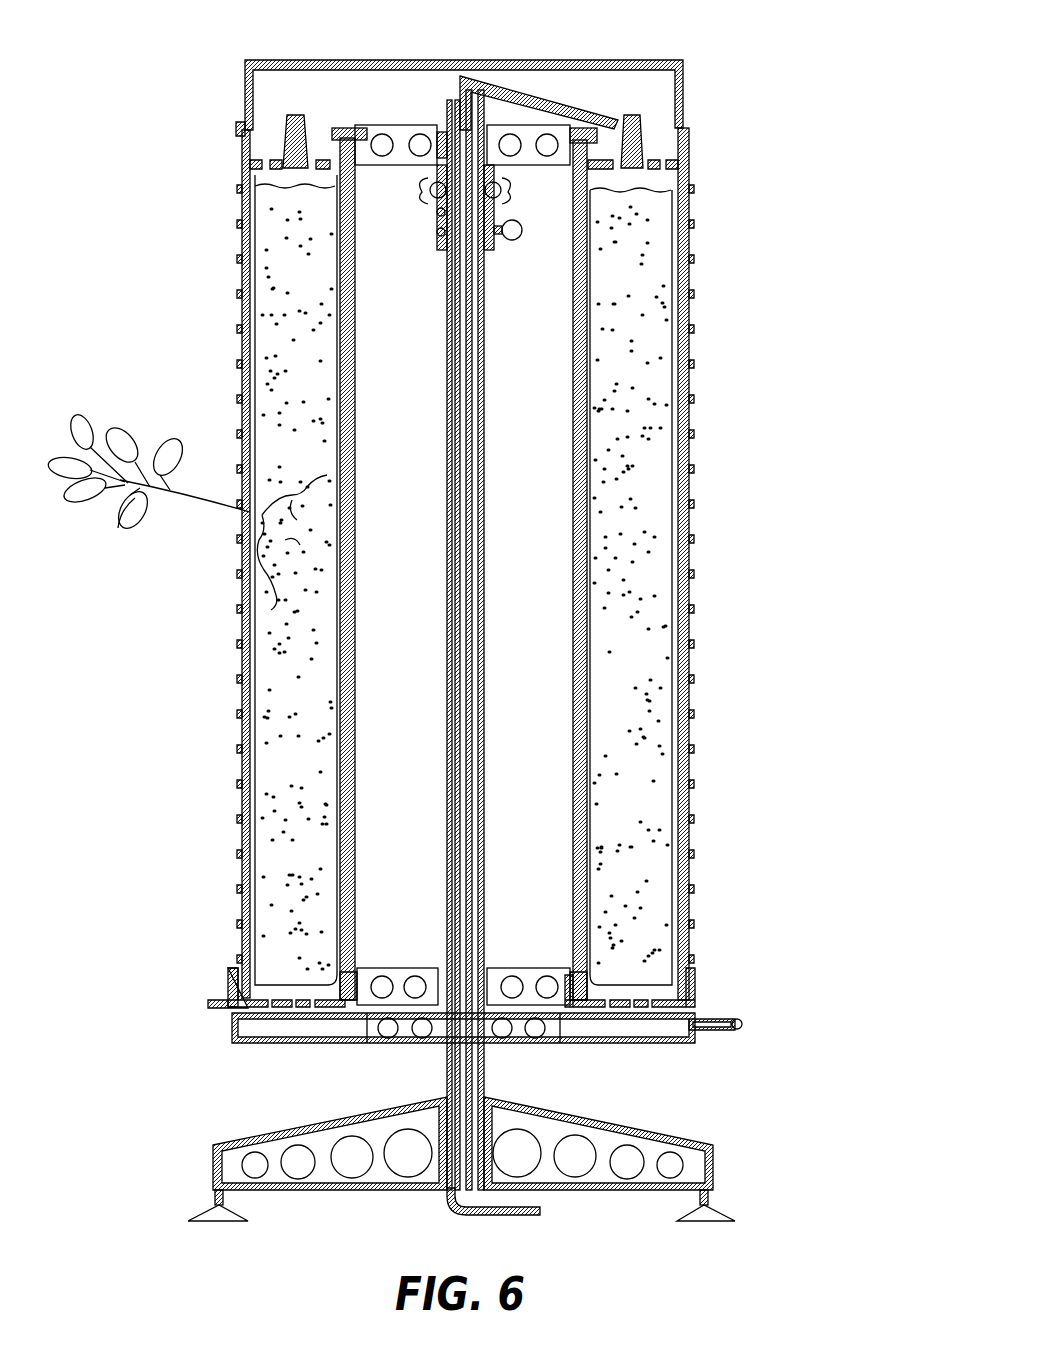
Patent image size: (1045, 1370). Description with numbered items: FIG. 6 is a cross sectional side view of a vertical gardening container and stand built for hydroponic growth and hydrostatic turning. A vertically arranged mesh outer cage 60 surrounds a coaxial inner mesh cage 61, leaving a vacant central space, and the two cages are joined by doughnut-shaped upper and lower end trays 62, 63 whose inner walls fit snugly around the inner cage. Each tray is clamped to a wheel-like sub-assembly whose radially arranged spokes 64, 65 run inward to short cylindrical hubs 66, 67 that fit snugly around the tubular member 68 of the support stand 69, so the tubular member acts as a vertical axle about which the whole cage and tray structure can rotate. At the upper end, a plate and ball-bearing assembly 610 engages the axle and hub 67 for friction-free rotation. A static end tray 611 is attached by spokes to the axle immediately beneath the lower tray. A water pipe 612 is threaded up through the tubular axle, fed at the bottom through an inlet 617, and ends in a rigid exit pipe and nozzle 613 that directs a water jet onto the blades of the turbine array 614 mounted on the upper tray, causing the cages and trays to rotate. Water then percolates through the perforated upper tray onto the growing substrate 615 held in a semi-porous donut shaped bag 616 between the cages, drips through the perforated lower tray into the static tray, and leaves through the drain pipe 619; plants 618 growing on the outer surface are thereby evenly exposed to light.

The mesh outer cage 60 is at (245, 182).
The inner mesh cage 61 is at (342, 418).
The upper end tray 62 is at (692, 145).
The lower end tray 63 is at (700, 983).
The spokes 64 is at (398, 972).
The spokes 65 is at (530, 160).
The cylindrical hub 66 is at (517, 972).
The cylindrical hub 67 is at (410, 128).
The tubular member 68 is at (483, 520).
The support stand 69 is at (693, 1170).
The plate and ball-bearing assembly 610 is at (507, 198).
The static end tray 611 is at (225, 1030).
The water pipe 612 is at (483, 588).
The rigid exit pipe and nozzle 613 is at (528, 97).
The turbine array 614 is at (650, 125).
The growing substrate 615 is at (295, 478).
The donut shaped bag 616 is at (262, 268).
The inlet 617 is at (540, 1207).
The plants 618 is at (118, 528).
The drain pipe 619 is at (733, 1020).